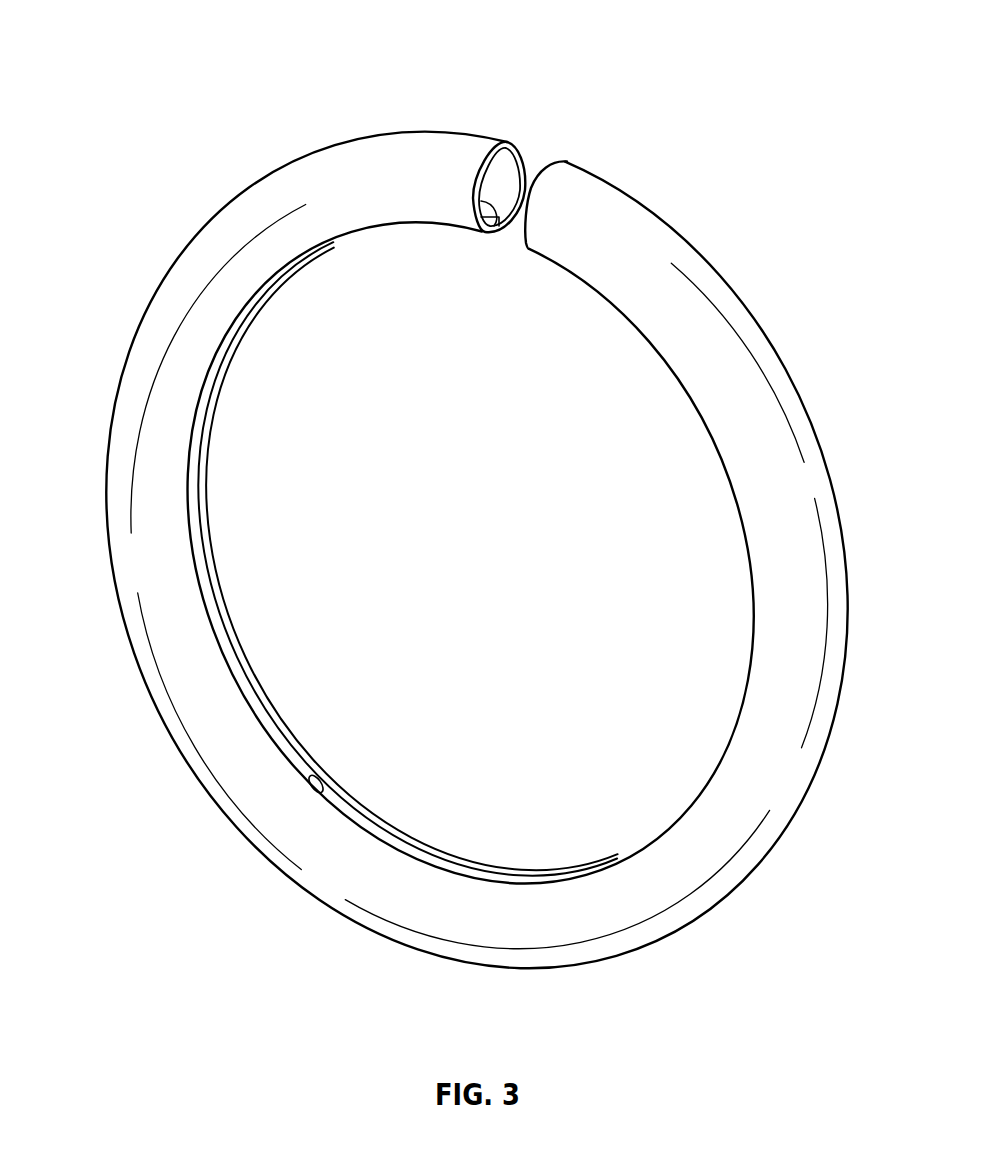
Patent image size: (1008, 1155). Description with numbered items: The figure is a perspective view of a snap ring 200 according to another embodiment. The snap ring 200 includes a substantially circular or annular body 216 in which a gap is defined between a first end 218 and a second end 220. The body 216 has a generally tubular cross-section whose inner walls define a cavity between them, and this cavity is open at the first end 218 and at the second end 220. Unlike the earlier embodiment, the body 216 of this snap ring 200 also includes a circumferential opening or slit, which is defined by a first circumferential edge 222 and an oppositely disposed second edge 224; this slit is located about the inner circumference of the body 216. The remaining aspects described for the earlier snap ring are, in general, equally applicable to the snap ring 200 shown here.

The snap ring 200 is at (214, 108).
The body 216 is at (150, 307).
The first end 218 is at (488, 233).
The second end 220 is at (553, 161).
The first circumferential edge 222 is at (311, 778).
The second edge 224 is at (263, 738).